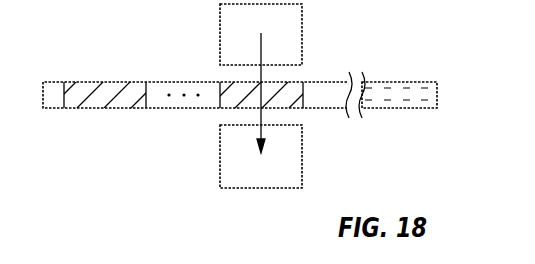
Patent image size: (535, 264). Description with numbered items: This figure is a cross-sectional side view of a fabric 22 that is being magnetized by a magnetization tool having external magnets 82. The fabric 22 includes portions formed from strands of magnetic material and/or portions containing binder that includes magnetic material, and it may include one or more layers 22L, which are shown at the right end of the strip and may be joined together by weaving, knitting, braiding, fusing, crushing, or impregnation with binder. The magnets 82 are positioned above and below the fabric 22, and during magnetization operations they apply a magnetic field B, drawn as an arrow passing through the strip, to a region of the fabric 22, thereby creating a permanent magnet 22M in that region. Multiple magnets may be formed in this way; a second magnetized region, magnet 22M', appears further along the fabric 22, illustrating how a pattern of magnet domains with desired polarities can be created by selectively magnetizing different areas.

The external magnets 82 is at (292, 37).
The fabric 22 is at (240, 95).
The layers 22L is at (428, 97).
The magnet 22M is at (297, 113).
The magnet 22M' is at (104, 123).
The magnetic field B is at (260, 112).